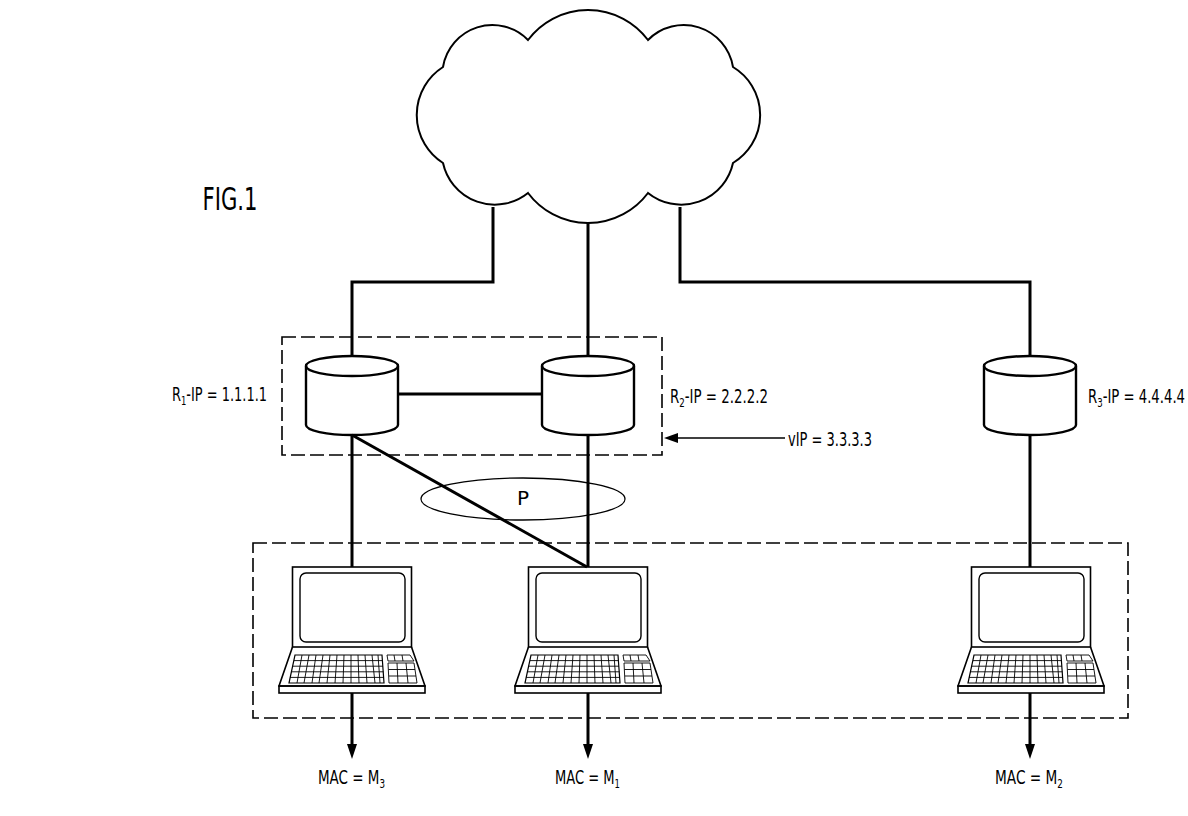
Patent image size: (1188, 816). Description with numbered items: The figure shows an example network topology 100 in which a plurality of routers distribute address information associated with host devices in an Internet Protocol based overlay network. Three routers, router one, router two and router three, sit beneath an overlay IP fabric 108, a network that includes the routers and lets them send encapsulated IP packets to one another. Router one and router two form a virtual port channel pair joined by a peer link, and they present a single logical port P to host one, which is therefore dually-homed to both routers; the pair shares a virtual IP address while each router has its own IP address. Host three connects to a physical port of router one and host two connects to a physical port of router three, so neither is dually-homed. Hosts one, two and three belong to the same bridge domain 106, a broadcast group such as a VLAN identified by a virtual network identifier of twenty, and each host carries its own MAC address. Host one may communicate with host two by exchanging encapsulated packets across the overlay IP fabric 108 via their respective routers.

The network 100 is at (930, 163).
The overlay IP fabric 108 is at (761, 114).
The bridge domain 106 is at (866, 543).